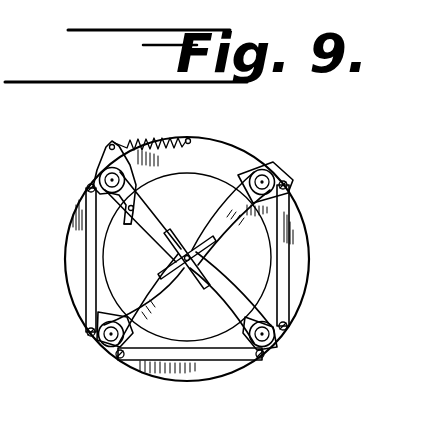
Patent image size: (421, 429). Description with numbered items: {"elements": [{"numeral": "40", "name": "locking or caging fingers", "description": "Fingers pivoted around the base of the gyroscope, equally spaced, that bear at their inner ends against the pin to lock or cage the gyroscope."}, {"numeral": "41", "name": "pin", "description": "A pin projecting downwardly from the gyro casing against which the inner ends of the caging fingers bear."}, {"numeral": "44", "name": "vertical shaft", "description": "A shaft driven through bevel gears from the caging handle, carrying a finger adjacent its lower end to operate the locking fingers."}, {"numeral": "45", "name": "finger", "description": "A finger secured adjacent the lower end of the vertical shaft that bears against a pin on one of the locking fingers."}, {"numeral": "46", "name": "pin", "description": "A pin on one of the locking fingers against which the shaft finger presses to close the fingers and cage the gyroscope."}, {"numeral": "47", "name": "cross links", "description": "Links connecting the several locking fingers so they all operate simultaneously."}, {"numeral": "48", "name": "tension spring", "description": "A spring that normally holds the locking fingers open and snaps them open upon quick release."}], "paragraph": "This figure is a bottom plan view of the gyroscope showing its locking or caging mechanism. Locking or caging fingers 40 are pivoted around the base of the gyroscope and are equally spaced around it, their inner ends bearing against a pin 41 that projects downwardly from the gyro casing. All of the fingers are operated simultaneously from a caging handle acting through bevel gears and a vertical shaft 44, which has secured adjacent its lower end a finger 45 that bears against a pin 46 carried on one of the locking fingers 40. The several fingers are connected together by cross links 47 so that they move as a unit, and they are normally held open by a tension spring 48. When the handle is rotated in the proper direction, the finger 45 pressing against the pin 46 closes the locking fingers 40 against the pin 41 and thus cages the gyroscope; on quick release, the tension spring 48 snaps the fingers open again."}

The spider 40 is at (240, 310).
The pointer lever 41 is at (193, 260).
The pawl 44 is at (100, 180).
The pawl arm 45 is at (128, 232).
The pin 46 is at (134, 208).
The connecting bar 47 is at (282, 217).
The spring 48 is at (145, 143).